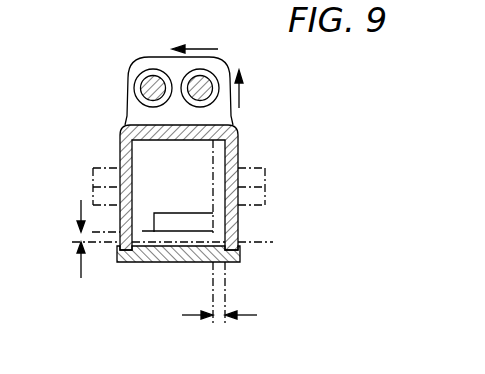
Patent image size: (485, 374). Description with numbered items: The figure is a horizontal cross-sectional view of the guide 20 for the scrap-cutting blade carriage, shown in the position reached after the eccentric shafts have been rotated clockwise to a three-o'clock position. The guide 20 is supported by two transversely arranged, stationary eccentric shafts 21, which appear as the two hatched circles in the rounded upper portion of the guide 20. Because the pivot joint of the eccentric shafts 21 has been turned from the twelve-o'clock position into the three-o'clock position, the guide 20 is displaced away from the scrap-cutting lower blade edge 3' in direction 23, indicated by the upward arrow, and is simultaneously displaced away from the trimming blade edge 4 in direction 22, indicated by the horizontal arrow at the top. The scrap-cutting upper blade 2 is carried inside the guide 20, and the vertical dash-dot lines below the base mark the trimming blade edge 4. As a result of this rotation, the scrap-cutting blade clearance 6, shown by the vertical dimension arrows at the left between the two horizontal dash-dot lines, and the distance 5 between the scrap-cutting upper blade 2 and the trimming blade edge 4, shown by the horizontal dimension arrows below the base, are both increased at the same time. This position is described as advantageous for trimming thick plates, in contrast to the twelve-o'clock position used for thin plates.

The scrap-cutting upper blade 2 is at (178, 216).
The scrap-cutting lower blade edge 3' is at (268, 225).
The trimming blade edge 4 is at (225, 286).
The distance between scrap-cutting upper blade and trimming blade edge 5 is at (217, 323).
The scrap-cutting blade clearance 6 is at (70, 239).
The guide for the scrap-cutting blade carriage 20 is at (234, 156).
The eccentric shafts 21 is at (200, 84).
The direction of displacement away from trimming blade edge 22 is at (202, 48).
The direction of displacement away from scrap-cutting lower blade edge 23 is at (242, 94).